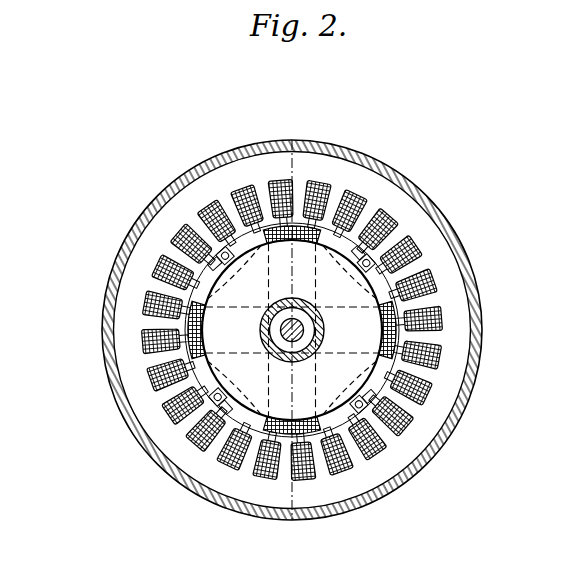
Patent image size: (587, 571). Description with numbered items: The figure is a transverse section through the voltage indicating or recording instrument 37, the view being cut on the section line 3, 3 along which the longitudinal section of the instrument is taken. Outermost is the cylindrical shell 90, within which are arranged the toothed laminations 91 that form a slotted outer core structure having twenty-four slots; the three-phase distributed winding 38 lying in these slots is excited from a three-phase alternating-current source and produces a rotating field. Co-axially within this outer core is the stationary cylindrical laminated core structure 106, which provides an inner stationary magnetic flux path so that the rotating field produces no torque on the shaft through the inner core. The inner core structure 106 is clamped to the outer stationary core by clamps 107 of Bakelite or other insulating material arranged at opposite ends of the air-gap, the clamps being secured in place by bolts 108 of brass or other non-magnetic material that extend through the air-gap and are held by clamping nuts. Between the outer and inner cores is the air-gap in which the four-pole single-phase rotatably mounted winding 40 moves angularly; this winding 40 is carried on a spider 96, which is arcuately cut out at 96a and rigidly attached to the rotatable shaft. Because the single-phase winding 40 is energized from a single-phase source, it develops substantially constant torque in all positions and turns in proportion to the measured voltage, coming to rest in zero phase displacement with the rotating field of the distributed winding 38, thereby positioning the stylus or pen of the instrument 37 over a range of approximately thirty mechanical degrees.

The section line 3— 3 is at (292, 140).
The voltage indicating or recording instrument 37 is at (509, 416).
The three-phase distributed winding 38 is at (442, 318).
The four-pole single-phase rotatably mounted winding 40 is at (250, 232).
The cylindrical shell 90 is at (430, 212).
The toothed laminations 91 is at (447, 302).
The spider 96 is at (207, 360).
The arcuate cut-out 96a is at (250, 392).
The cylindrical laminated core structure 106 is at (265, 420).
The clamps 107 is at (372, 268).
The bolts 108 is at (353, 252).